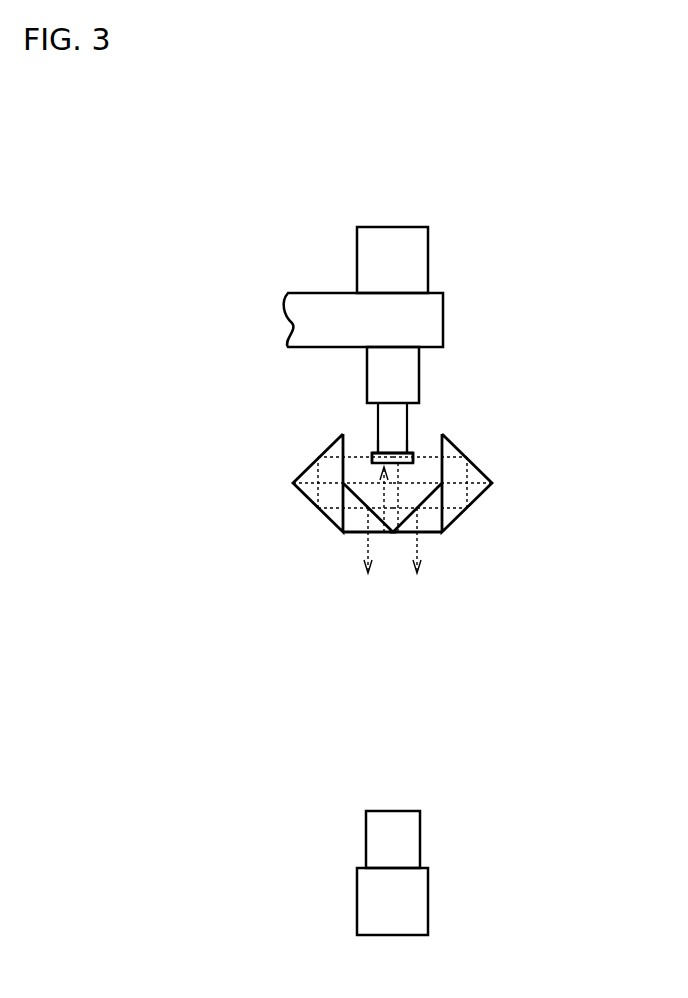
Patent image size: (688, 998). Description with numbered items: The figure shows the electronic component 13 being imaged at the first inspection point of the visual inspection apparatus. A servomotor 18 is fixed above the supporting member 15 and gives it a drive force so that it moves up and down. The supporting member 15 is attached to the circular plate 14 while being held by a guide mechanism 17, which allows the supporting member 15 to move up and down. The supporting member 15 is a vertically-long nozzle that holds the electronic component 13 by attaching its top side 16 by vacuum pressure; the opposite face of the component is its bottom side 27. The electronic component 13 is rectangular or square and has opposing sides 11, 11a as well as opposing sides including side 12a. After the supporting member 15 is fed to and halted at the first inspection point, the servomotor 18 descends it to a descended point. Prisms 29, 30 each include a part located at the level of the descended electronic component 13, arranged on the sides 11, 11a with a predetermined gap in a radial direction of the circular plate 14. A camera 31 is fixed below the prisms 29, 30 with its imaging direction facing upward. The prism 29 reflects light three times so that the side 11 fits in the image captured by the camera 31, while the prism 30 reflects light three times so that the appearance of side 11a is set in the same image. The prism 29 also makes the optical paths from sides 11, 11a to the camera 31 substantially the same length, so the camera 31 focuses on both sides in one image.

The servomotor 18 is at (403, 240).
The circular plate 14 is at (425, 312).
The guide mechanism 17 is at (383, 367).
The supporting member 15 is at (397, 415).
The top side 16 is at (387, 452).
The side 12a is at (402, 450).
The side 11 is at (413, 450).
The side 11a is at (373, 452).
The prism 30 is at (330, 493).
The prism 29 is at (457, 493).
The electronic component 13 is at (387, 532).
The bottom side 27 is at (397, 532).
The camera 31 is at (413, 903).